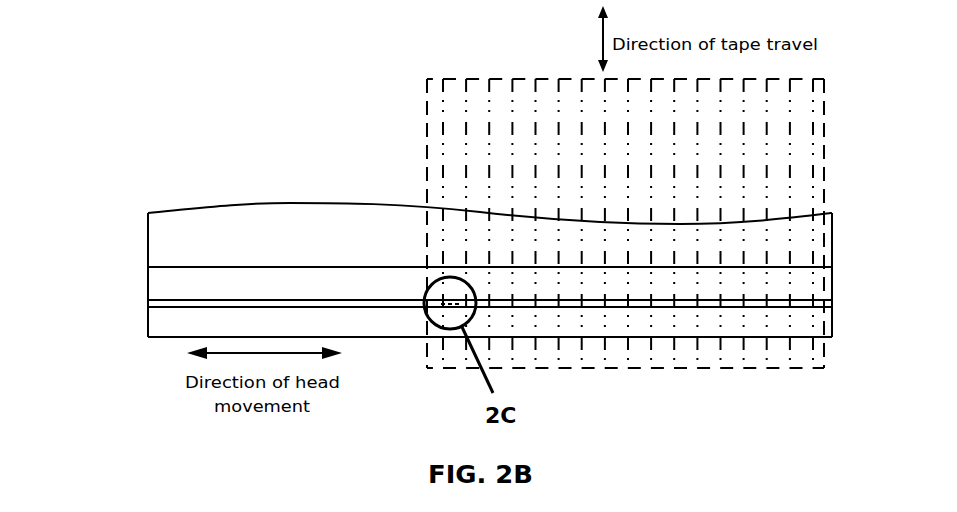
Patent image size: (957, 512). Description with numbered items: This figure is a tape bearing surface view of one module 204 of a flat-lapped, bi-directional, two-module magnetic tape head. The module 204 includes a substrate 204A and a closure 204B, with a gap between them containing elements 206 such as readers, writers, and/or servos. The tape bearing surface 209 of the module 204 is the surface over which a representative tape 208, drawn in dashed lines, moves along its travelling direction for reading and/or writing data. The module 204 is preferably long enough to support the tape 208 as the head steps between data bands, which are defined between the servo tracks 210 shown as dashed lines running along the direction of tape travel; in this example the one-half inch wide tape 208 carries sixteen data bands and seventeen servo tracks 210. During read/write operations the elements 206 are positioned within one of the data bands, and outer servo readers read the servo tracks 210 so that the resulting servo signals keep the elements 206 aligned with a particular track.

The module 204 is at (187, 185).
The substrate 204A is at (277, 203).
The closure 204B is at (148, 323).
The elements 206 is at (428, 302).
The tape 208 is at (427, 80).
The tape bearing surface 209 is at (334, 286).
The servo tracks 210 is at (534, 159).